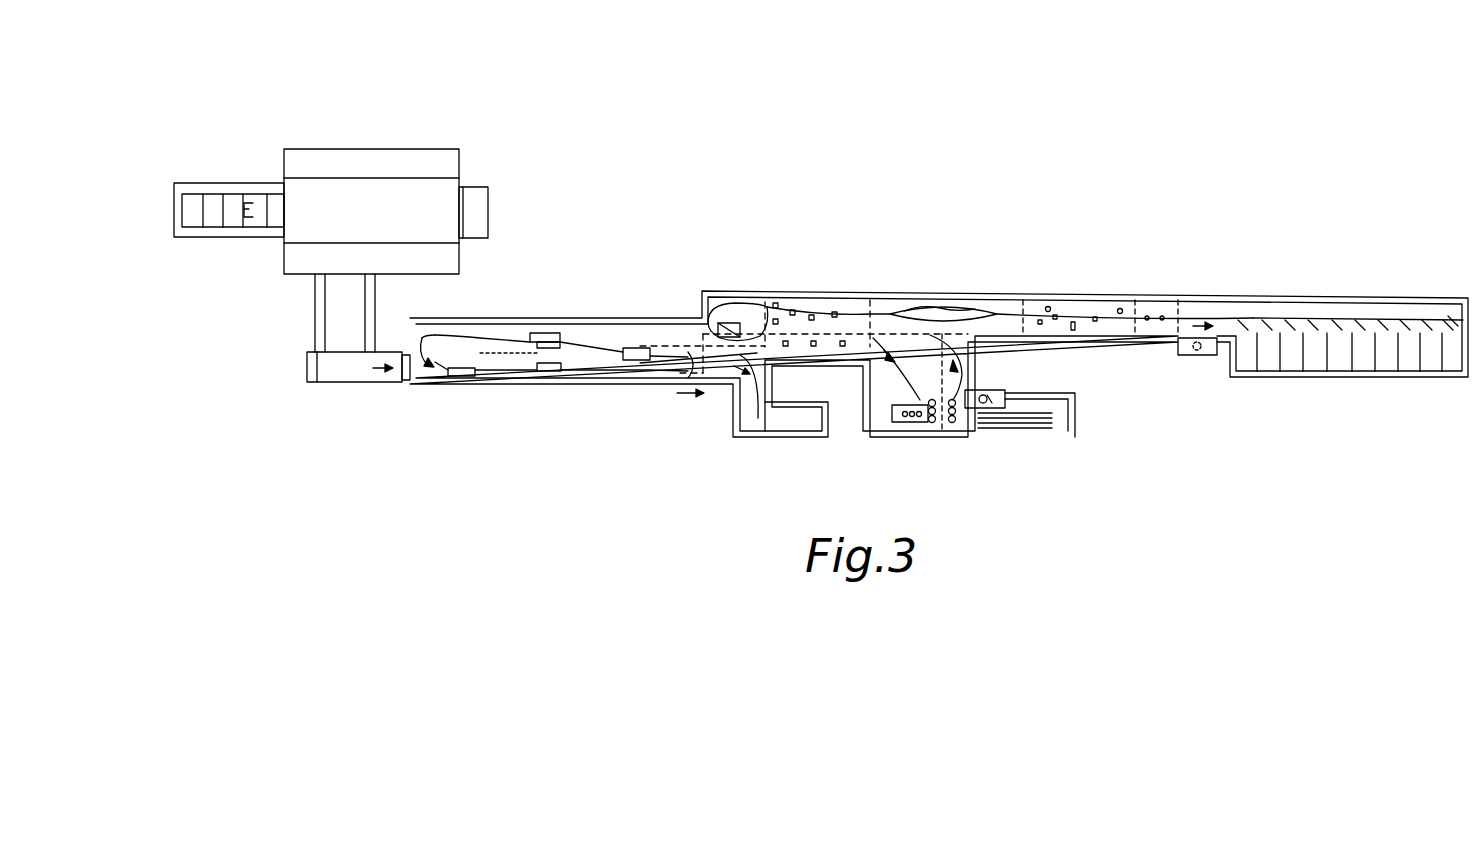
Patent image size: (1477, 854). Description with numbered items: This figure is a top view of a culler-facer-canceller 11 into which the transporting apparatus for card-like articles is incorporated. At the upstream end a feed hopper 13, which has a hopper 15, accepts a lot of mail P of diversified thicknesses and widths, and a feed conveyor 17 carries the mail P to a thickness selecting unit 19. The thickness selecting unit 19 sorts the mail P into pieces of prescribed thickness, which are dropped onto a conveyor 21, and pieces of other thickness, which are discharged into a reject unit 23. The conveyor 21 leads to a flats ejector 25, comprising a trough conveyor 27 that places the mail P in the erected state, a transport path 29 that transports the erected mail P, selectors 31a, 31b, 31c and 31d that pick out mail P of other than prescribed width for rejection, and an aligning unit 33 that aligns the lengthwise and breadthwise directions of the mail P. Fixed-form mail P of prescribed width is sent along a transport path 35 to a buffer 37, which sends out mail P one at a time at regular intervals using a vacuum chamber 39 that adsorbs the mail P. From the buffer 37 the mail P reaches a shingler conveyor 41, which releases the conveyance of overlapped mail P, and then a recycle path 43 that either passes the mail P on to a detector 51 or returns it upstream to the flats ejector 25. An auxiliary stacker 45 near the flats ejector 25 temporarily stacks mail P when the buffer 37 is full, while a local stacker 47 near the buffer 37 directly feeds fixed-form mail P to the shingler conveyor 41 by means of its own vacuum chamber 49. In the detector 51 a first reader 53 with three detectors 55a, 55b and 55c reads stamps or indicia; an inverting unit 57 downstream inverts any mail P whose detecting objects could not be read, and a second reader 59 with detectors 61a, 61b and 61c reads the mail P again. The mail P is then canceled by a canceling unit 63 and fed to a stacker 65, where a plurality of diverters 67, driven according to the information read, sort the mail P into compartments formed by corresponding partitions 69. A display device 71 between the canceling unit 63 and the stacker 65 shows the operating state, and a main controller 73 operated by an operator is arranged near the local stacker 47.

The culler-facer-canceller 11 is at (816, 108).
The feed hopper 13 is at (212, 182).
The hopper 15 is at (193, 215).
The feed conveyor 17 is at (230, 195).
The thickness selecting unit 19 is at (384, 147).
The conveyor 21 is at (338, 316).
The reject unit 23 is at (478, 215).
The flats ejector 25 is at (503, 388).
The trough conveyor 27 is at (343, 367).
The transport path 29 is at (603, 375).
The selector 31a is at (465, 378).
The selector 31b is at (563, 372).
The selector 31c is at (549, 333).
The selector 31d is at (640, 348).
The aligning unit 33 is at (657, 373).
The transport path 35 is at (840, 360).
The buffer 37 is at (903, 430).
The vacuum chamber 39 is at (933, 428).
The shingler conveyor 41 is at (873, 307).
The recycle path 43 is at (730, 307).
The auxiliary stacker 45 is at (793, 418).
The local stacker 47 is at (1000, 425).
The vacuum chamber 49 is at (960, 430).
The detector 51 is at (920, 292).
The first reader 53 is at (828, 302).
The first detector 55a is at (776, 303).
The second detector 55b is at (812, 312).
The third detector 55c is at (852, 310).
The inverting unit 57 is at (1000, 300).
The second reader 59 is at (1080, 305).
The first detector 61a is at (1042, 302).
The second detector 61b is at (1074, 330).
The third detector 61c is at (1123, 308).
The canceling unit 63 is at (1163, 300).
The stacker 65 is at (1318, 380).
The diverters 67 is at (1332, 322).
The partitions 69 is at (1410, 355).
The display device 71 is at (1195, 360).
The main controller 73 is at (998, 388).
The mail P is at (254, 207).